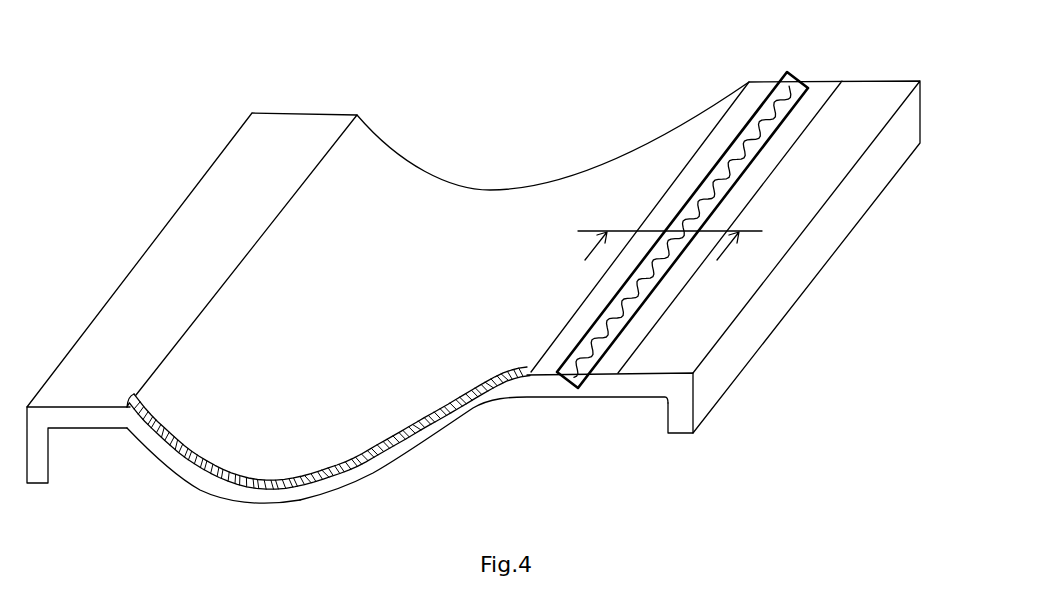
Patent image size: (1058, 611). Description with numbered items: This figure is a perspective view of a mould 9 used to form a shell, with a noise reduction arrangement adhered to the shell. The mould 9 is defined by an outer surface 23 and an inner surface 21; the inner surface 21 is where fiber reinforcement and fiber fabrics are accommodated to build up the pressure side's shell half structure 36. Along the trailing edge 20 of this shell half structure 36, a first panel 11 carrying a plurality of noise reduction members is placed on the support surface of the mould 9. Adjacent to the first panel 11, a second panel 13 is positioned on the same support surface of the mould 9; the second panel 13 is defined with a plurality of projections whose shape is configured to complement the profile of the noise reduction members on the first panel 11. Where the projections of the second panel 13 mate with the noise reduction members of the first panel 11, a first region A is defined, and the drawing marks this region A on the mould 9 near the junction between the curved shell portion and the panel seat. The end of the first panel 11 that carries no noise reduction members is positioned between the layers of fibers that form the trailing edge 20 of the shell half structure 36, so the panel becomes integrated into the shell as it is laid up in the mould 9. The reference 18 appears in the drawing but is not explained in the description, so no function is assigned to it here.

The mould 9 is at (263, 137).
The first panel 11 is at (752, 102).
The second panel 13 is at (820, 98).
The transition region 18 is at (568, 317).
The trailing edge 20 is at (137, 392).
The inner surface 21 is at (390, 427).
The outer surface 23 is at (285, 502).
The shell half structure 36 is at (270, 462).
The first region A is at (572, 377).